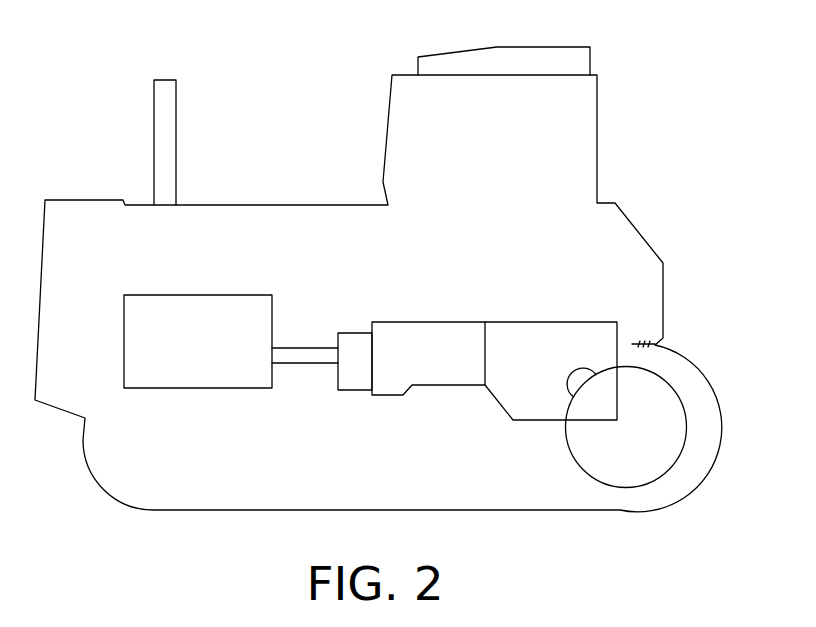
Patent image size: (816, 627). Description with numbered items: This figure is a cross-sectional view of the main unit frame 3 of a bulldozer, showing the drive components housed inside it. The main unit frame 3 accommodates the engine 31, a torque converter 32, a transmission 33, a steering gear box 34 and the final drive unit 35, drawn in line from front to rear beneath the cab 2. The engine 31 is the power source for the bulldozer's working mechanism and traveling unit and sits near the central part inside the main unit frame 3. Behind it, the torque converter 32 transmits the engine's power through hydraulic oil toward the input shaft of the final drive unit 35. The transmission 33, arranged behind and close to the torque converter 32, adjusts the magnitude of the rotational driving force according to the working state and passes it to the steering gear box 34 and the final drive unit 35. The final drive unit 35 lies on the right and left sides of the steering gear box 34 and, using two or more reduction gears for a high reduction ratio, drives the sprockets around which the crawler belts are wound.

The cab 2 is at (578, 93).
The main unit frame 3 is at (260, 212).
The engine 31 is at (208, 378).
The torque converter 32 is at (357, 382).
The transmission 33 is at (443, 377).
The steering gear box 34 is at (590, 337).
The final drive unit 35 is at (657, 393).